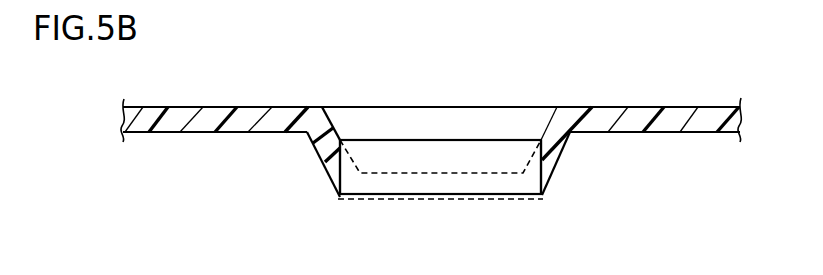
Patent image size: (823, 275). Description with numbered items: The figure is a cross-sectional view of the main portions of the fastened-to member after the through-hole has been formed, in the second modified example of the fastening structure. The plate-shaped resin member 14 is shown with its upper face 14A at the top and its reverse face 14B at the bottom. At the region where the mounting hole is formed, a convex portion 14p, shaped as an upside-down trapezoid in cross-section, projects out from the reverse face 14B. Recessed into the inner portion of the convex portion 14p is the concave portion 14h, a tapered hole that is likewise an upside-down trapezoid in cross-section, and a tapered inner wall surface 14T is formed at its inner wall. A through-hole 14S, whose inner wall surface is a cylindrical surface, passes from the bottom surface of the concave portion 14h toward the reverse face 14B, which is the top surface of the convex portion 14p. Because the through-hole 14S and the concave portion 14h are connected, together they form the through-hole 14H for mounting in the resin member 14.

The resin member 14 is at (591, 107).
The upper surface 14A is at (692, 107).
The reverse face 14B is at (690, 132).
The tapered inner wall surface 14T is at (339, 127).
The through-hole 14S is at (339, 185).
The concave portion 14h is at (397, 125).
The through-hole for mounting 14H is at (465, 205).
The convex portion 14p is at (551, 174).